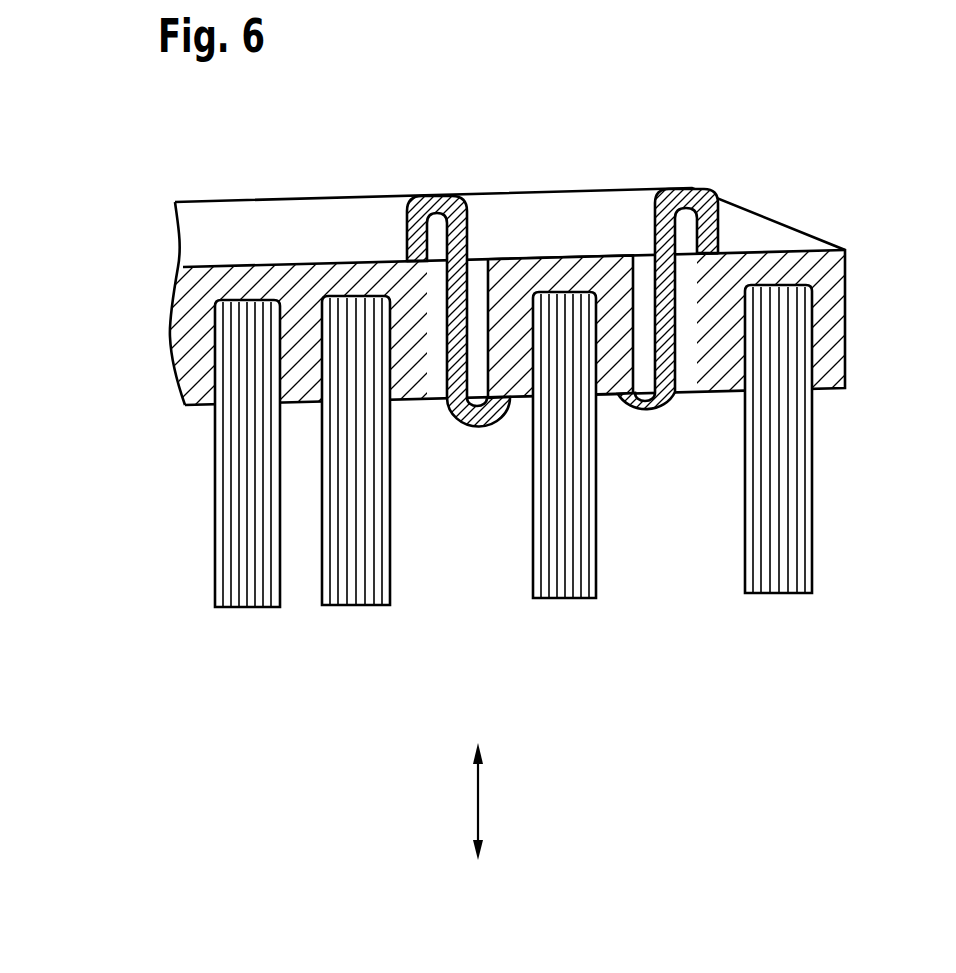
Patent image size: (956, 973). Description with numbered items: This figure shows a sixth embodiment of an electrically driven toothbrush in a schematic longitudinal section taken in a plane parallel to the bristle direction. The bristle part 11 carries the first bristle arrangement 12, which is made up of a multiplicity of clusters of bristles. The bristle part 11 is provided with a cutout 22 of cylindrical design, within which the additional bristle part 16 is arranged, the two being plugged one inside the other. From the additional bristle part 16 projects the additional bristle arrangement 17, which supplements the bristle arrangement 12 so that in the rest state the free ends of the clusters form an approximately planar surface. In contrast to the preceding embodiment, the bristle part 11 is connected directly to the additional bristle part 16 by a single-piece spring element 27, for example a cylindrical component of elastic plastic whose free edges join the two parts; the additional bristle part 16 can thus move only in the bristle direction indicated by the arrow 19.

The bristle part 11 is at (185, 338).
The first bristle arrangement 12 is at (243, 608).
The additional bristle part 16 is at (573, 265).
The additional bristle arrangement 17 is at (568, 598).
The arrow 19 is at (480, 800).
The cutout 22 is at (692, 376).
The spring element 27 is at (440, 196).